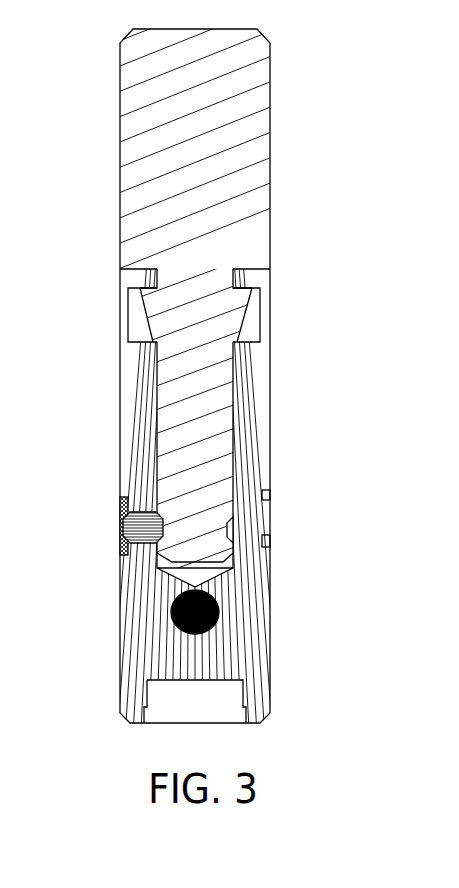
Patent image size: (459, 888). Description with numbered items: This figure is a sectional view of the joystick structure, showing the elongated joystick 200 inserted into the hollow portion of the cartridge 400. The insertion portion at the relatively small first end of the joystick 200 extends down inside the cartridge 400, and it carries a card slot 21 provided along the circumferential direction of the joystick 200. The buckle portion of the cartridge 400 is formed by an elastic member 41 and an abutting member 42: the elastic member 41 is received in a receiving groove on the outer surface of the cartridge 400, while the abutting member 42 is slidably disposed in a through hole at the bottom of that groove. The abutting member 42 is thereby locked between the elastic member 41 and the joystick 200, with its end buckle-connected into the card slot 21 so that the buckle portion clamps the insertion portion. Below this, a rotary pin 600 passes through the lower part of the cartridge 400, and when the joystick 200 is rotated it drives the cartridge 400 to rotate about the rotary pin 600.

The cartridge 400 is at (257, 386).
The joystick 200 is at (234, 432).
The card slot 21 is at (229, 521).
The elastic member 41 is at (118, 510).
The abutting member 42 is at (128, 533).
The rotary pin 600 is at (221, 610).